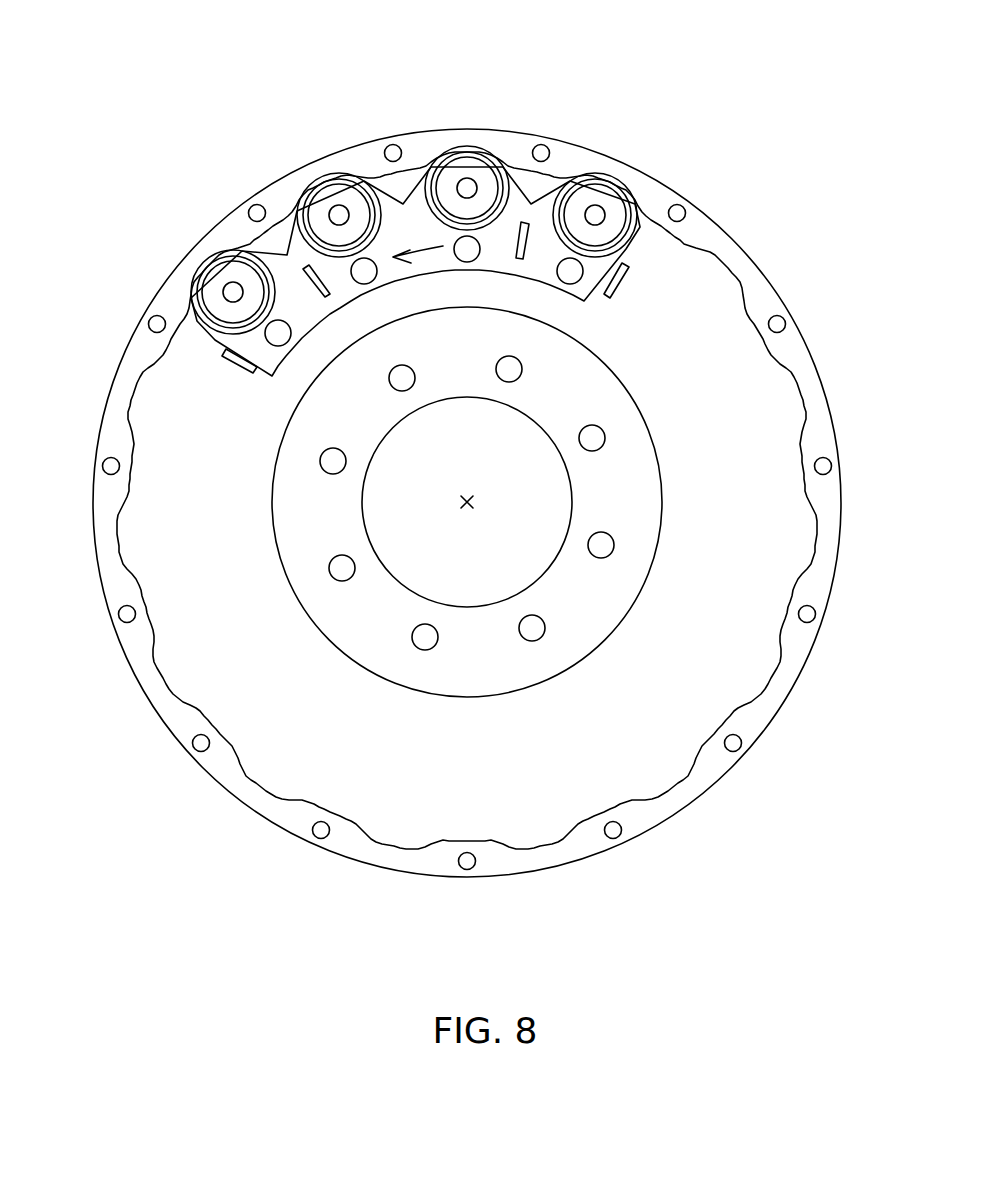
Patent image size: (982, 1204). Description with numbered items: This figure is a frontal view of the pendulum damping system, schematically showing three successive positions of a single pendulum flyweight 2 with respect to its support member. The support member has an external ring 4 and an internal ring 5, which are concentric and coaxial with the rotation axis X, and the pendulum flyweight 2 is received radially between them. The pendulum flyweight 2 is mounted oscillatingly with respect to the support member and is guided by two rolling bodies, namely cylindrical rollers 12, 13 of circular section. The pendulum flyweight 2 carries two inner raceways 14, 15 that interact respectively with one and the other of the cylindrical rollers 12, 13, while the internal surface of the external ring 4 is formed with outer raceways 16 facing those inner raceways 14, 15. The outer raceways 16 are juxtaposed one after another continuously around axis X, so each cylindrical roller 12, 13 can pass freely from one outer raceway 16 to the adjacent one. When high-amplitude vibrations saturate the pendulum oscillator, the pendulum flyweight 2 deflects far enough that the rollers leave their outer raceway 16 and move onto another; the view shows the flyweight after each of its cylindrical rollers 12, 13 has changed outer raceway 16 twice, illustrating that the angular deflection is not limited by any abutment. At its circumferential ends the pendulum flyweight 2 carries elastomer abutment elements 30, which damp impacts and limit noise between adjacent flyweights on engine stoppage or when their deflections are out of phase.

The pendulum flyweight 2 is at (670, 288).
The external ring 4 is at (728, 233).
The internal ring 5 is at (617, 498).
The cylindrical roller 12 is at (205, 275).
The cylindrical roller 13 is at (470, 150).
The inner raceway 14 is at (250, 248).
The inner raceway 15 is at (512, 250).
The outer raceway 16 is at (223, 255).
The abutment element 30 is at (237, 370).